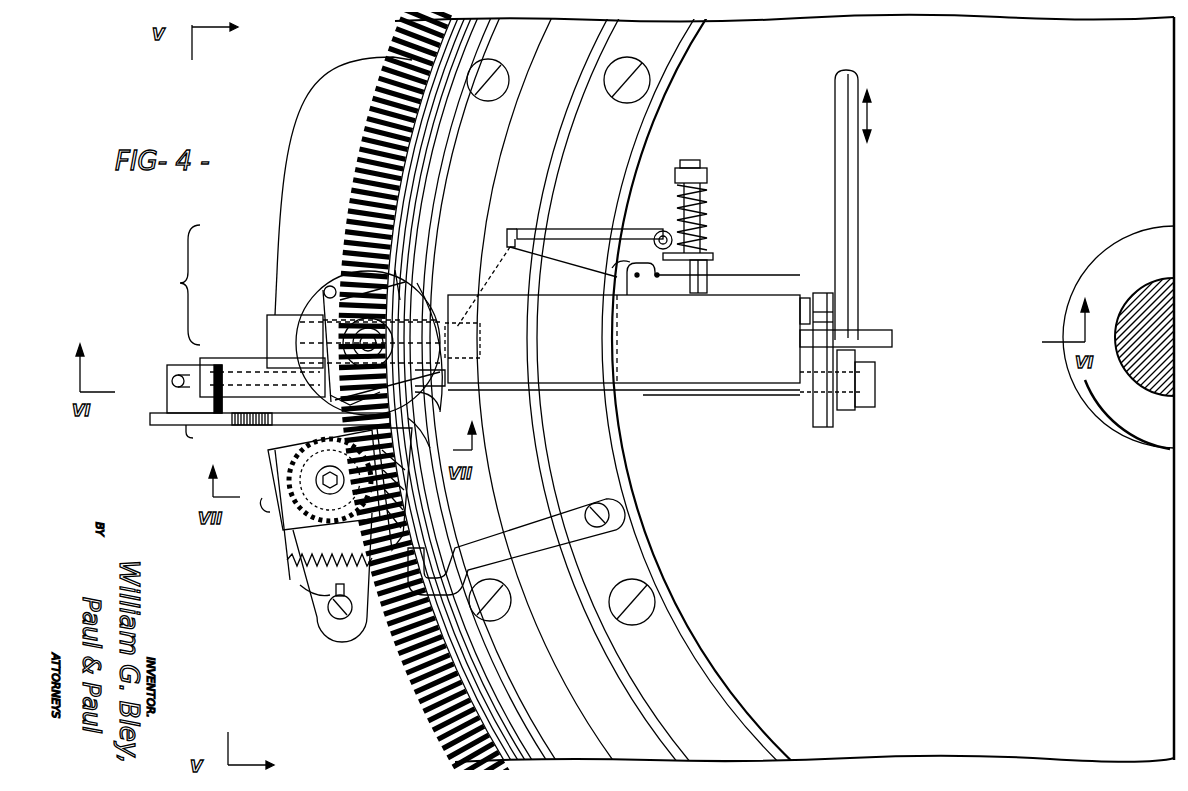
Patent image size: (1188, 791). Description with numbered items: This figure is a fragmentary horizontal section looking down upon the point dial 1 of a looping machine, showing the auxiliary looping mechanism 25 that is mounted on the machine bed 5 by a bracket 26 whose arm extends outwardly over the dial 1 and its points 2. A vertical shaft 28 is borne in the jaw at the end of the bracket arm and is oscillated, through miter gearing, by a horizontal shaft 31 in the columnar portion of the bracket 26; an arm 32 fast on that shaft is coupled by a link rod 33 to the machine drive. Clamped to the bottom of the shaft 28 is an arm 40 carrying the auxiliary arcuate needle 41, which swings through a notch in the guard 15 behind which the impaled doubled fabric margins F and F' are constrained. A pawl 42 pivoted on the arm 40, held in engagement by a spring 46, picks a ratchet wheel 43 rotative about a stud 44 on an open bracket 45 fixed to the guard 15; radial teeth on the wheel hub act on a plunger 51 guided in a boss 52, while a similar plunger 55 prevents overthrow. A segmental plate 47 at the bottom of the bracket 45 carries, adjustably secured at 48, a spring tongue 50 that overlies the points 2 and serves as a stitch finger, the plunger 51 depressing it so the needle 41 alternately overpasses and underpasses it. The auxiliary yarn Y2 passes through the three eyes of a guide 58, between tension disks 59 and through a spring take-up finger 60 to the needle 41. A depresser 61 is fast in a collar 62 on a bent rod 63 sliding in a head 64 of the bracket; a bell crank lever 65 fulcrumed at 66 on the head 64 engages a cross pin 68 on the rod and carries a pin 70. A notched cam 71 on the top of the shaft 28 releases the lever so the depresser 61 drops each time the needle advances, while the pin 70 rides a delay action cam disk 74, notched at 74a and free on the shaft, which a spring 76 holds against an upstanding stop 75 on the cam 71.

The dial 1 is at (490, 115).
The points 2 is at (380, 152).
The bed 5 is at (1078, 410).
The guard 15 is at (420, 524).
The auxiliary mechanism 25 is at (173, 285).
The bracket 26 is at (736, 384).
The vertical shaft 28 is at (368, 335).
The horizontal shaft 31 is at (880, 332).
The arm 32 is at (823, 428).
The link rod 33 is at (845, 188).
The arm 40 is at (481, 333).
The auxiliary arcuate needle 41 is at (426, 402).
The pawl 42 is at (429, 437).
The ratchet wheel 43 is at (332, 577).
The stud 44 is at (316, 480).
The open bracket 45 is at (274, 468).
The spring 46 is at (306, 587).
The segmental plate 47 is at (280, 217).
The adjustable securing point 48 is at (326, 614).
The spring tongue 50 is at (329, 548).
The plunger 51 is at (392, 489).
The boss 52 is at (284, 538).
The plunger 55 is at (256, 503).
The guide 58 is at (617, 254).
The tension disks 59 is at (702, 257).
The spring take-up finger 60 is at (576, 229).
The depresser 61 is at (343, 382).
The collar 62 is at (306, 366).
The bent rod 63 is at (172, 380).
The head 64 is at (244, 358).
The bell crank lever 65 is at (160, 421).
The fulcrum 66 is at (282, 433).
The cross pin 68 is at (192, 430).
The pin 70 is at (394, 489).
The cam 71 is at (322, 306).
The delay action cam disk 74 is at (412, 298).
The notch 74a is at (446, 379).
The stop 75 is at (330, 286).
The spring 76 is at (404, 259).
The half portion of fabric edge margin F is at (488, 637).
The half portion of fabric edge margin F' is at (390, 660).
The auxiliary yarn Y2 is at (768, 275).